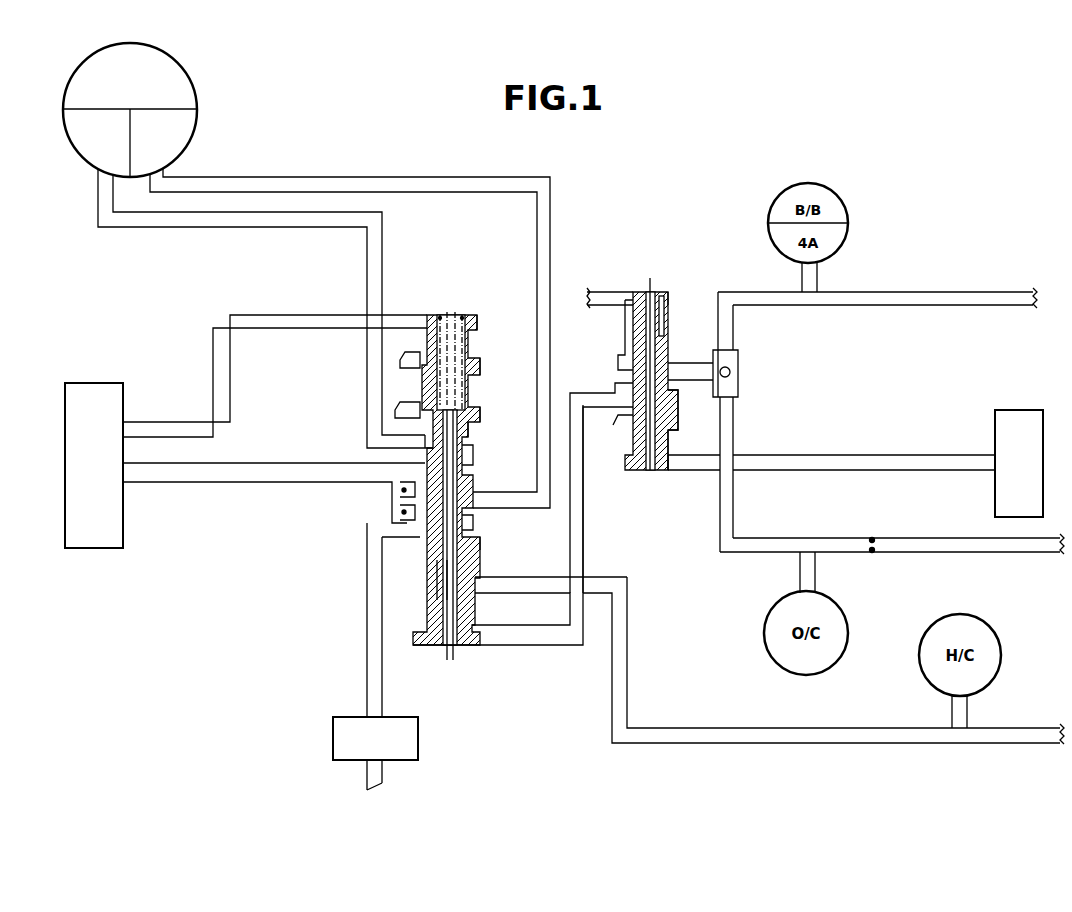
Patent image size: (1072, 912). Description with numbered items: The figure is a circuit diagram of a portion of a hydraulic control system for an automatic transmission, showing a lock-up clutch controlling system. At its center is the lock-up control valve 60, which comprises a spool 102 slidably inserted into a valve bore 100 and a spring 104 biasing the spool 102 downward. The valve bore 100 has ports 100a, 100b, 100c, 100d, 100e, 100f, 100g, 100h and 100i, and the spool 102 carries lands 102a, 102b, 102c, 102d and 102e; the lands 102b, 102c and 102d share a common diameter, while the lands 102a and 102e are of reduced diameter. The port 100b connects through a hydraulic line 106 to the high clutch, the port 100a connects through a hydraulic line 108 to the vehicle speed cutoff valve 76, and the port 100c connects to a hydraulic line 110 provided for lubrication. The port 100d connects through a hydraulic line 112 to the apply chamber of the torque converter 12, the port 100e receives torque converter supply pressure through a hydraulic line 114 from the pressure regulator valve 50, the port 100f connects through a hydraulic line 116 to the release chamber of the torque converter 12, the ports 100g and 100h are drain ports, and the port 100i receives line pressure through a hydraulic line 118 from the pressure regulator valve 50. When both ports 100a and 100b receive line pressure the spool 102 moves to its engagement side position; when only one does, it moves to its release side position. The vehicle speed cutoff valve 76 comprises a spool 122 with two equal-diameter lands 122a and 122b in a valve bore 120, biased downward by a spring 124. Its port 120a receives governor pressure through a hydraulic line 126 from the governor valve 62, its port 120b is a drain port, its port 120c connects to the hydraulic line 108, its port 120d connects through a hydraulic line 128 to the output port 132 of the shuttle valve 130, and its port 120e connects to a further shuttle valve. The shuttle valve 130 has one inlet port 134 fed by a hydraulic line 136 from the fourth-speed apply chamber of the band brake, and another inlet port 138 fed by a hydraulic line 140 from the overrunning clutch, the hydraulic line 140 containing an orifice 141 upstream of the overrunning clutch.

The torque converter 12 is at (196, 90).
The pressure regulator valve 50 is at (125, 383).
The lock-up control valve 60 is at (428, 461).
The governor valve 62 is at (1012, 410).
The vehicle speed cutoff valve 76 is at (681, 377).
The valve bore 100 is at (470, 335).
The port 100a is at (478, 636).
The port 100b is at (483, 585).
The port 100c is at (480, 530).
The port 100d is at (475, 498).
The port 100e is at (480, 462).
The port 100f is at (480, 432).
The drain port 100g is at (480, 398).
The drain port 100h is at (480, 362).
The port 100i is at (480, 318).
The spool 102 is at (452, 648).
The land 102a is at (440, 568).
The land 102b is at (430, 520).
The land 102c is at (430, 442).
The land 102d is at (430, 378).
The land 102e is at (430, 342).
The spring 104 is at (445, 315).
The hydraulic line 106 is at (612, 688).
The hydraulic line 108 is at (583, 553).
The hydraulic line 110 is at (385, 660).
The hydraulic line 112 is at (552, 232).
The hydraulic line 114 is at (318, 483).
The hydraulic line 116 is at (372, 258).
The hydraulic line 118 is at (353, 315).
The valve bore 120 is at (633, 470).
The port 120a is at (677, 465).
The drain port 120b is at (677, 432).
The port 120c is at (679, 405).
The port 120d is at (676, 360).
The port 120e is at (670, 300).
The spool 122 is at (650, 470).
The land 122a is at (633, 410).
The land 122b is at (633, 357).
The spring 124 is at (665, 296).
The hydraulic line 126 is at (815, 455).
The hydraulic line 128 is at (745, 365).
The shuttle valve 130 is at (773, 353).
The output port 132 is at (722, 362).
The inlet port 134 is at (725, 325).
The hydraulic line 136 is at (855, 305).
The inlet port 138 is at (730, 408).
The hydraulic line 140 is at (826, 538).
The orifice 141 is at (878, 545).